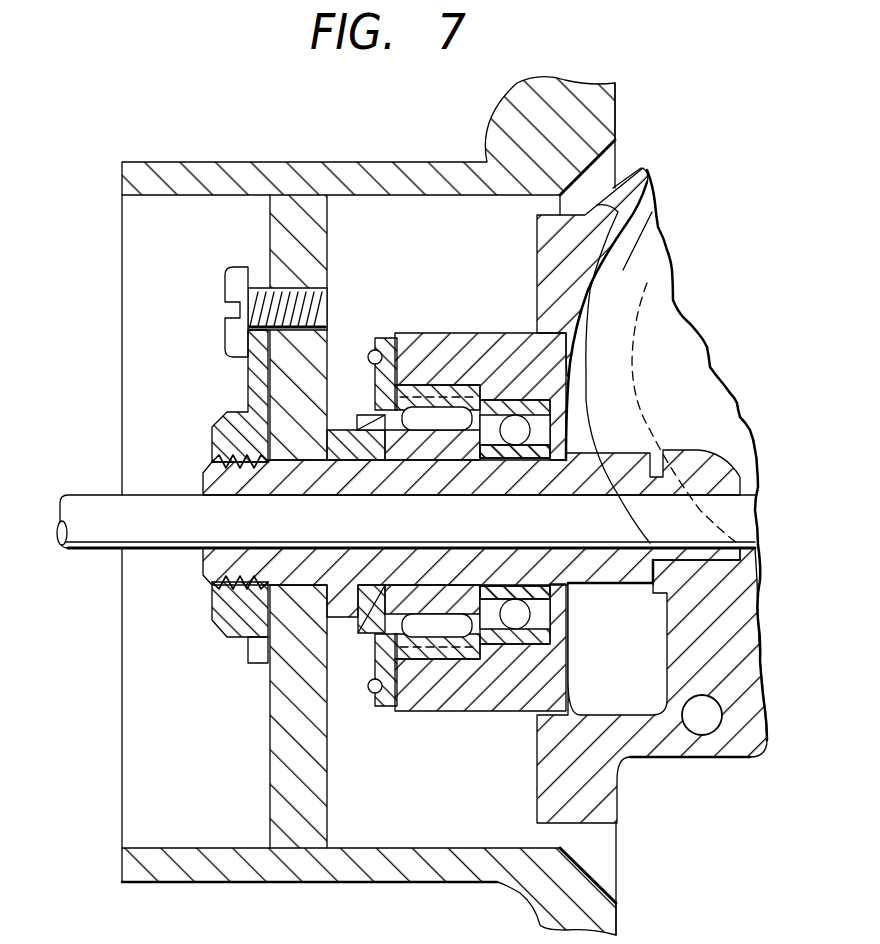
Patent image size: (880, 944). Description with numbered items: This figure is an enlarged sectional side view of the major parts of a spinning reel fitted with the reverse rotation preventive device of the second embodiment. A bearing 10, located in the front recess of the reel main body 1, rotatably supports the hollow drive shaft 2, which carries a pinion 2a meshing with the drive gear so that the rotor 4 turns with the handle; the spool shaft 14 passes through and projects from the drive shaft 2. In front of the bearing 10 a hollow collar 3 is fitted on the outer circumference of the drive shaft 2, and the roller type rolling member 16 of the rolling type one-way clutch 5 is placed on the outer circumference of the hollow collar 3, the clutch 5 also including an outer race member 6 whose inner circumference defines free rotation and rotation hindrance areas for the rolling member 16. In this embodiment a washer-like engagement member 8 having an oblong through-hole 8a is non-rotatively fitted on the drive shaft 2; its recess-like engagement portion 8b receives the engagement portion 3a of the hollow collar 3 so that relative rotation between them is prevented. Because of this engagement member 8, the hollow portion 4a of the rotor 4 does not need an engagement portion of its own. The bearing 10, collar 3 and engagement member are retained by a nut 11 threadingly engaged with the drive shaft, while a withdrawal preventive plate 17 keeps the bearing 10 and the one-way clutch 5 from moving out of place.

The reel main body 1 is at (699, 762).
The hollow drive shaft 2 is at (425, 507).
The pinion 2a is at (619, 597).
The hollow collar 3 is at (493, 454).
The engagement portion 3a is at (372, 630).
The rotor 4 is at (620, 130).
The hollow portion of the rotor 4a is at (363, 412).
The one-way clutch 5 is at (437, 455).
The outer race member 6 is at (463, 400).
The washer-like engagement member 8 is at (375, 338).
The oblong through-hole 8a is at (382, 462).
The recess-like engagement portion 8b is at (353, 440).
The bearing 10 is at (548, 410).
The nut 11 is at (213, 435).
The spool shaft 14 is at (72, 552).
The roller type rolling member 16 is at (413, 385).
The withdrawal preventive plate 17 is at (382, 338).